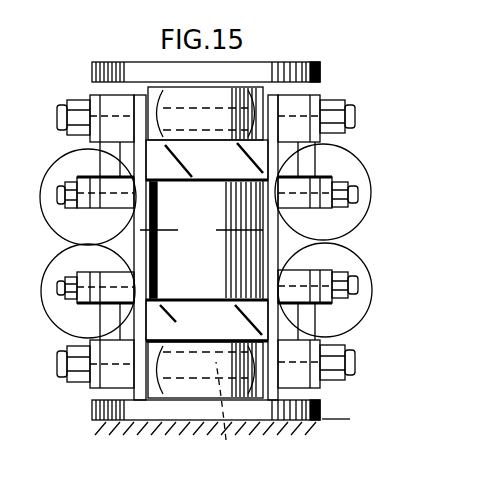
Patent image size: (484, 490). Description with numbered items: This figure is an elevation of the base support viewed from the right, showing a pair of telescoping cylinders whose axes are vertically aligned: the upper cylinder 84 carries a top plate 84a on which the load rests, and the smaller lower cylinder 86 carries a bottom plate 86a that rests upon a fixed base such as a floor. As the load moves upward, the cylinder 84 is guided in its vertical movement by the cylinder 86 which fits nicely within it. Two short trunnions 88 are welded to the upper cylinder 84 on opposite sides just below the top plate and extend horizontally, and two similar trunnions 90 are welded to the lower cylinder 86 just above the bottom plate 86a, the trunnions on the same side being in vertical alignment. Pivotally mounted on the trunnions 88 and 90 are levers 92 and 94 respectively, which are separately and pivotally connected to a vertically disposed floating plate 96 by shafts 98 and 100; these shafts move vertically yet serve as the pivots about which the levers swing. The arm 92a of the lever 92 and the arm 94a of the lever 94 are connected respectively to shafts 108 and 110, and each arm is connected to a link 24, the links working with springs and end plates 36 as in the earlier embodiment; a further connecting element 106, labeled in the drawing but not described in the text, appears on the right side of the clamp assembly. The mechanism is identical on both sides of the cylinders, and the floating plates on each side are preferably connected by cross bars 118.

The top plate 84a is at (140, 64).
The upper cylinder 84 is at (264, 92).
The trunnions 88 is at (296, 64).
The lever 92 is at (100, 95).
The shaft 98 is at (58, 118).
The arm 92a is at (100, 153).
The end plate 36 is at (46, 176).
The shaft 108 is at (58, 194).
The link 24 is at (86, 213).
The right lock nut 106 is at (360, 193).
The cross bars 118 is at (207, 240).
The floating plate 96 is at (201, 231).
The shaft 110 is at (58, 287).
The arm 94a is at (307, 327).
The shaft 100 is at (58, 364).
The bottom plate 86a is at (90, 420).
The lower cylinder 86 is at (203, 392).
The trunnions 90 is at (232, 409).
The lever 94 is at (312, 390).